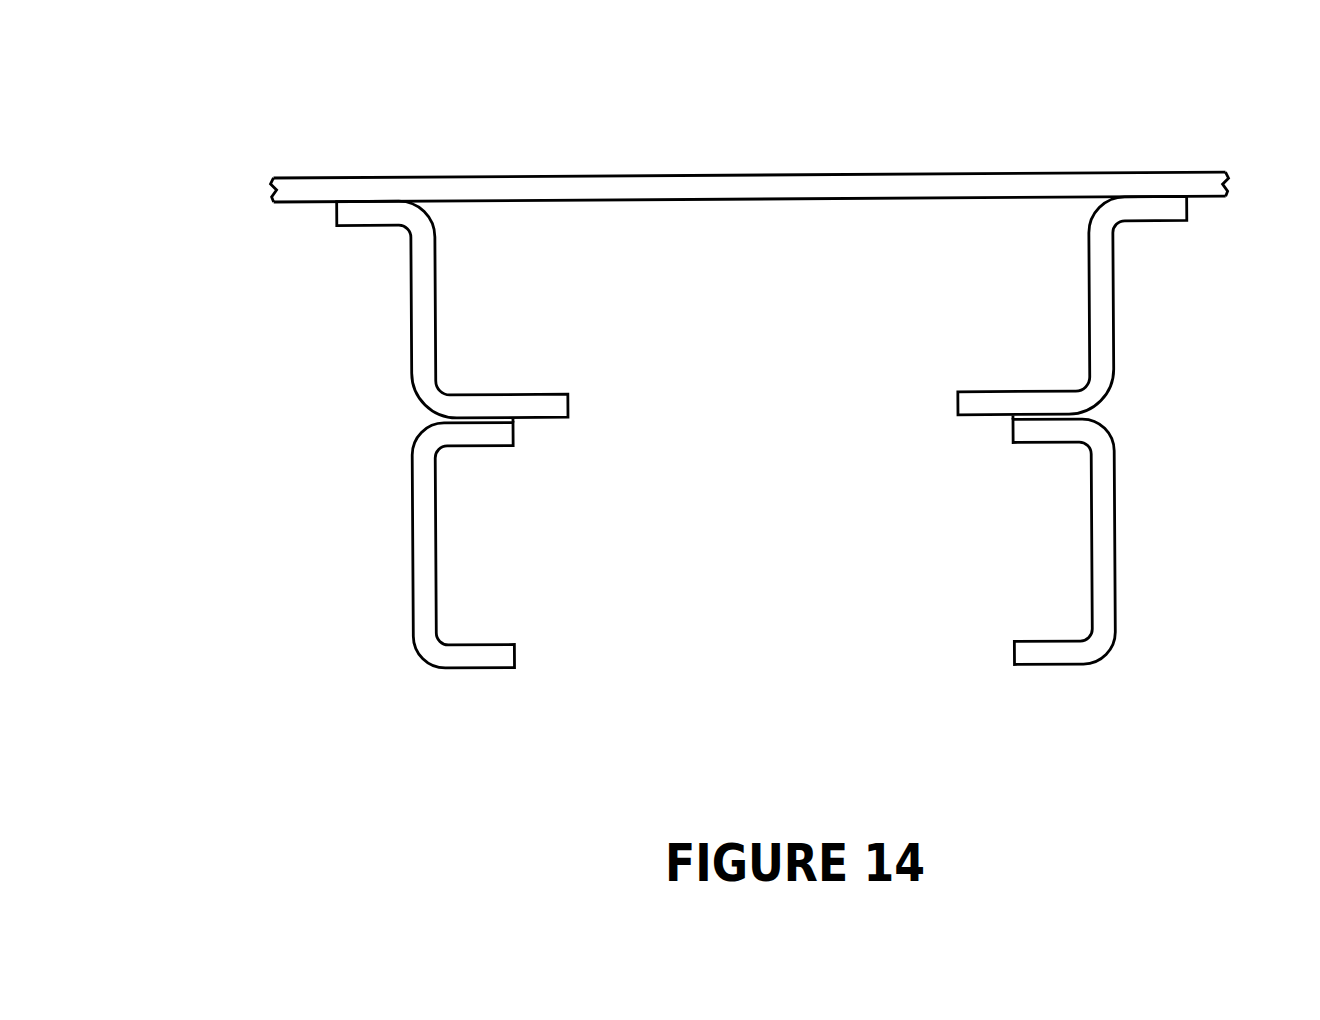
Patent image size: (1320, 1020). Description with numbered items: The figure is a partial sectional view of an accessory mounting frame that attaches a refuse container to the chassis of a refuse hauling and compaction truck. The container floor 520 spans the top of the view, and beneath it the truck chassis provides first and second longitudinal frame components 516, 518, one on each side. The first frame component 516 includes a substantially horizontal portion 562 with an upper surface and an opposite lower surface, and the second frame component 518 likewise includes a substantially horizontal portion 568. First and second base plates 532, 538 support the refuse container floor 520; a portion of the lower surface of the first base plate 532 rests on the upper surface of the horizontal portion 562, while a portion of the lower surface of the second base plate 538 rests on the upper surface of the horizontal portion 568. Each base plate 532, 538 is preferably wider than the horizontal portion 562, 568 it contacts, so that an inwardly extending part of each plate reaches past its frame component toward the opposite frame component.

The first longitudinal frame component 516 is at (420, 530).
The second longitudinal frame component 518 is at (1100, 525).
The container floor 520 is at (713, 182).
The first base plate 532 is at (528, 392).
The second base plate 538 is at (997, 390).
The horizontal portion 562 is at (517, 437).
The horizontal portion 568 is at (1007, 435).